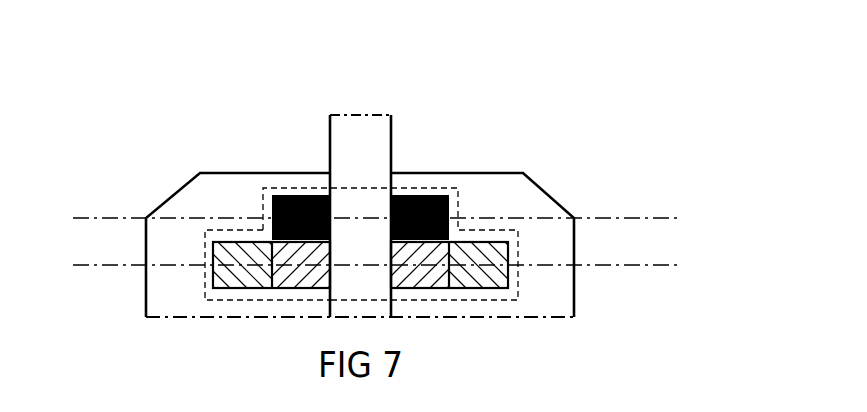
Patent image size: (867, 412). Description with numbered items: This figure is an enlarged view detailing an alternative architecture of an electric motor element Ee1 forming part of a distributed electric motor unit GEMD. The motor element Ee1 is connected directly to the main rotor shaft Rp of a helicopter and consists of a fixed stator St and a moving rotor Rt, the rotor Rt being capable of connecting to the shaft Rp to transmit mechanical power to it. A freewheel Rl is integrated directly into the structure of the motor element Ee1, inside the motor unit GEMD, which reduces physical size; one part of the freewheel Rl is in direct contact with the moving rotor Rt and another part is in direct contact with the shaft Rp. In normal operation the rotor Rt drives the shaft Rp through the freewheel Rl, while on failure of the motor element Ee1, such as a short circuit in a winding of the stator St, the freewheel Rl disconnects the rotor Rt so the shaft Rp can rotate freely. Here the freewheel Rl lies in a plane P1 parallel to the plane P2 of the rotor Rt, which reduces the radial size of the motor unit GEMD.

The motor unit GEMD is at (146, 289).
The main rotor shaft Rp is at (330, 143).
The freewheel Rl is at (418, 194).
The moving rotor Rt is at (458, 200).
The electric motor element Ee1 is at (208, 232).
The fixed stator St is at (480, 240).
The plane of the freewheel P1 is at (682, 265).
The plane of the rotor P2 is at (682, 218).